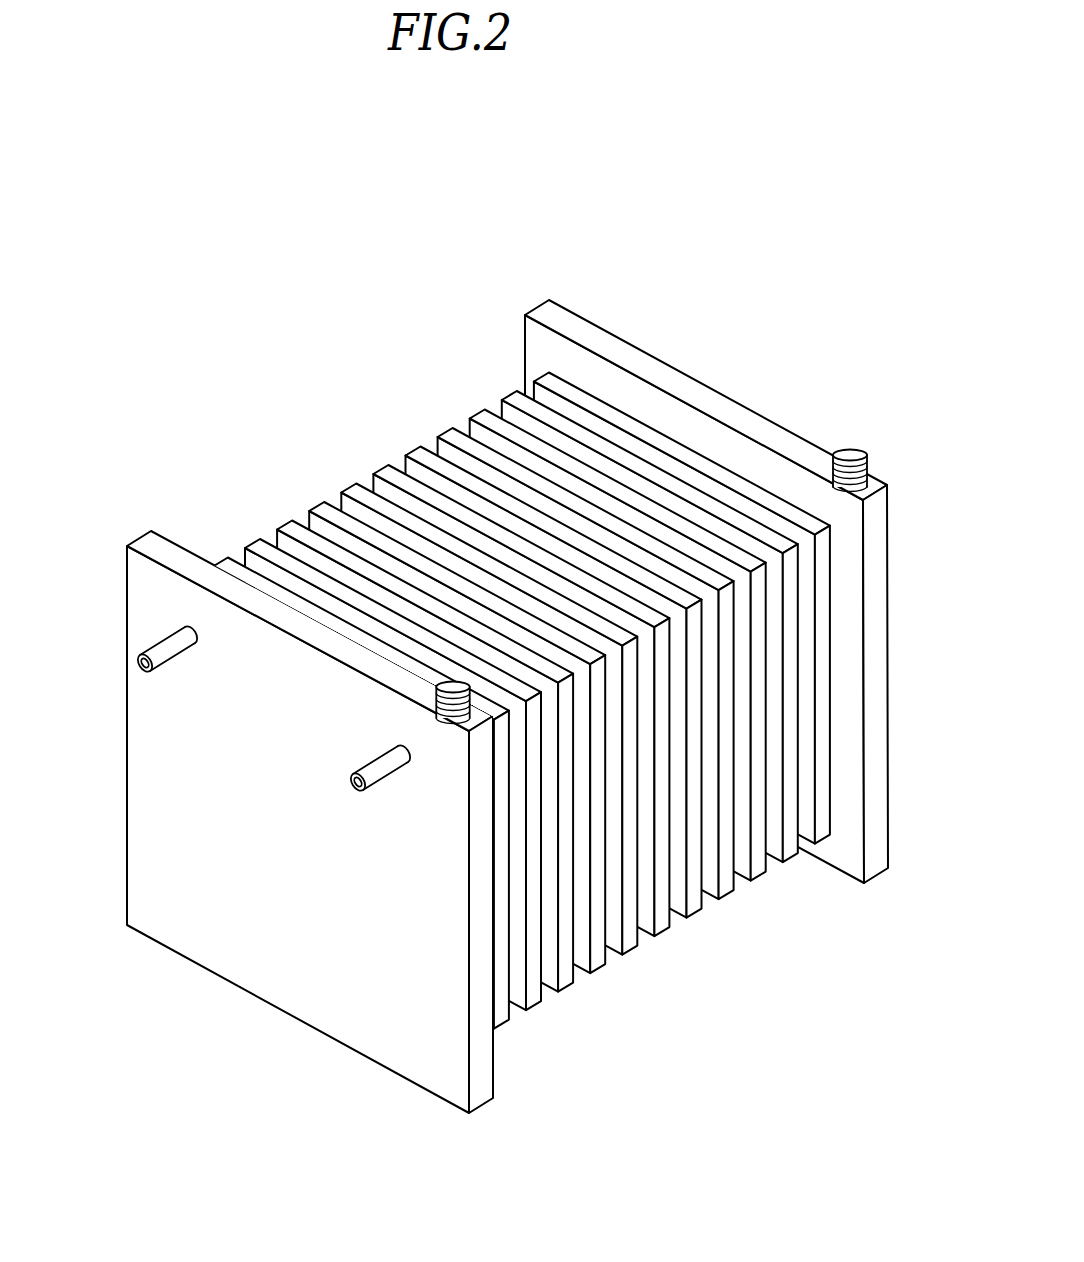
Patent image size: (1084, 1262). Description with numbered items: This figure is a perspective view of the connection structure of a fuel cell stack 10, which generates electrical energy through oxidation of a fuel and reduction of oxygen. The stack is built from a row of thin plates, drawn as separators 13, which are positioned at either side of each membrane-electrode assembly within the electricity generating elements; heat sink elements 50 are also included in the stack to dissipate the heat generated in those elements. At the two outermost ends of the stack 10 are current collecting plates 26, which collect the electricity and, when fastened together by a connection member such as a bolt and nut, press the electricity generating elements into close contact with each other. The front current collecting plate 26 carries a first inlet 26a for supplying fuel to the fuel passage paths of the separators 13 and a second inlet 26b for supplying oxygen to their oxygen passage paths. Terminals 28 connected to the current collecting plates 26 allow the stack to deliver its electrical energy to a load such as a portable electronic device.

The fuel cell stack 10 is at (507, 690).
The separators 13 is at (521, 701).
The current collecting plates 26 is at (877, 603).
The first inlet 26a is at (145, 647).
The second inlet 26b is at (382, 780).
The terminals 28 is at (440, 681).
The heat sink elements 50 is at (359, 467).